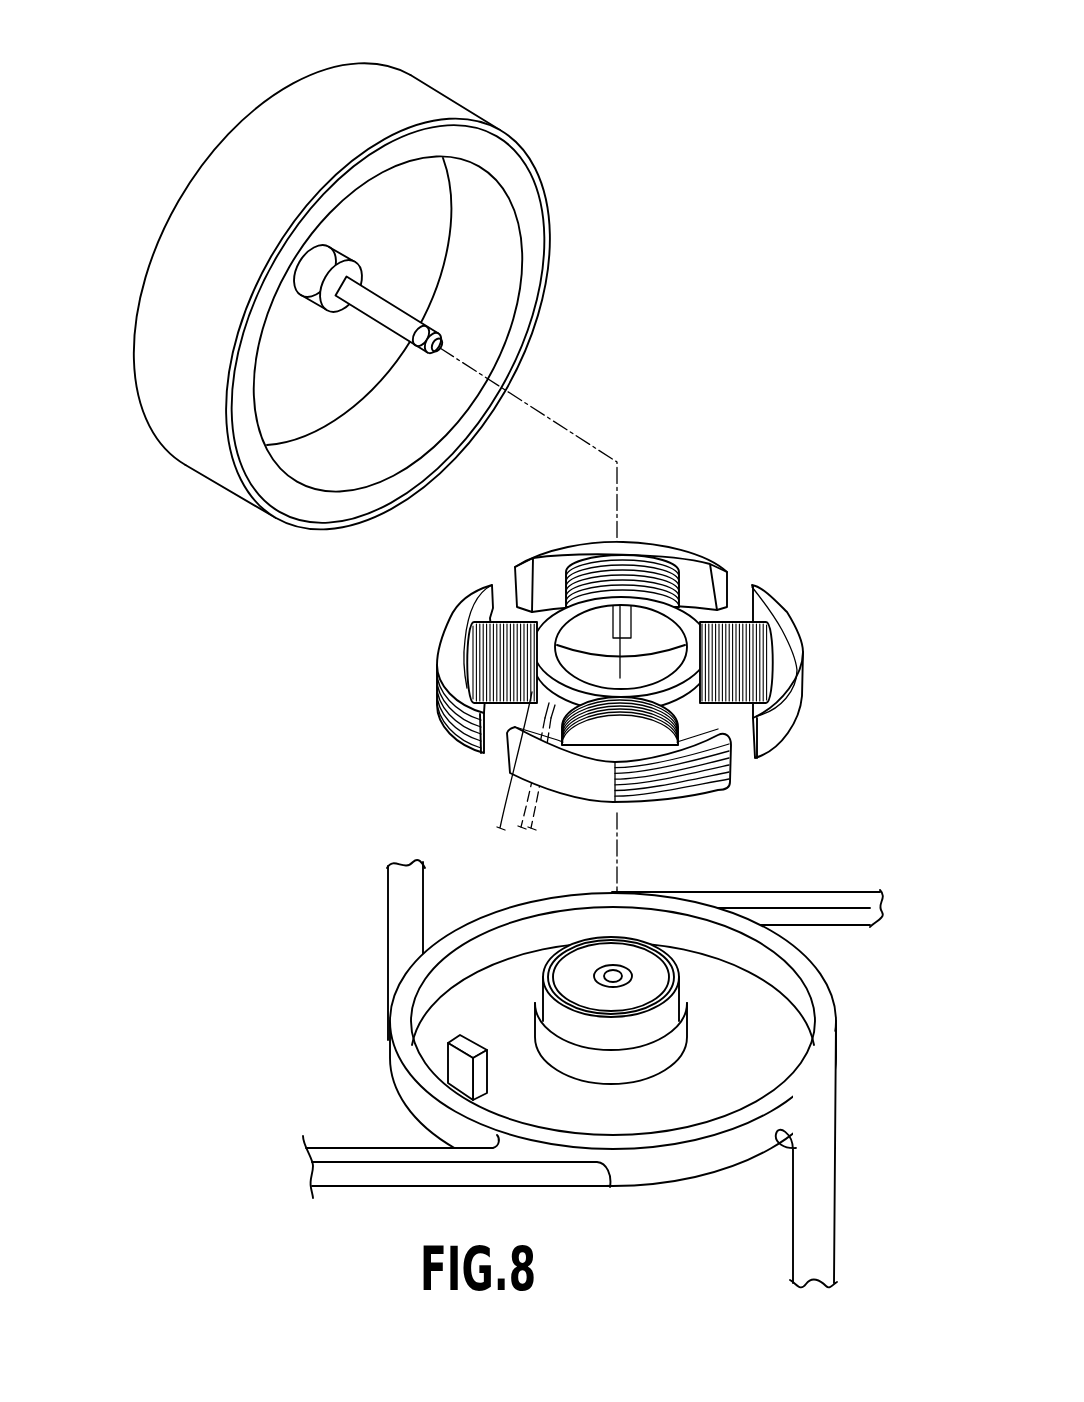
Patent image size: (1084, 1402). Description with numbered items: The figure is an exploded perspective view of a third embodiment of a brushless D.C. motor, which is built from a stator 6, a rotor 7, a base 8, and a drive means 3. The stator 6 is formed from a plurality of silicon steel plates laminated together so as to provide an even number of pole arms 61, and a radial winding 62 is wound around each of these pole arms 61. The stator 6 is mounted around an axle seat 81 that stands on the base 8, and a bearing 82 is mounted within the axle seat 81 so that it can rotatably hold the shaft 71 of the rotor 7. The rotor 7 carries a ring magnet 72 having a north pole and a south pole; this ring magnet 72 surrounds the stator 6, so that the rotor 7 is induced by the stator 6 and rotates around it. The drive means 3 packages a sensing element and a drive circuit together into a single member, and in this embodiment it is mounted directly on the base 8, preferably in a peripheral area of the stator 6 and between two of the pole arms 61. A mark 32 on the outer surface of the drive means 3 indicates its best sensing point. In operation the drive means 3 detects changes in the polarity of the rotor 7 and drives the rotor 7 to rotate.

The rotor 7 is at (343, 84).
The ring magnet 72 is at (523, 181).
The shaft 71 is at (400, 326).
The stator 6 is at (671, 510).
The pole arms 61 is at (703, 553).
The radial winding 62 is at (734, 620).
The base 8 is at (827, 1018).
The bearing 82 is at (656, 970).
The axle seat 81 is at (663, 1060).
The drive means 3 is at (470, 1067).
The mark 32 is at (455, 1073).